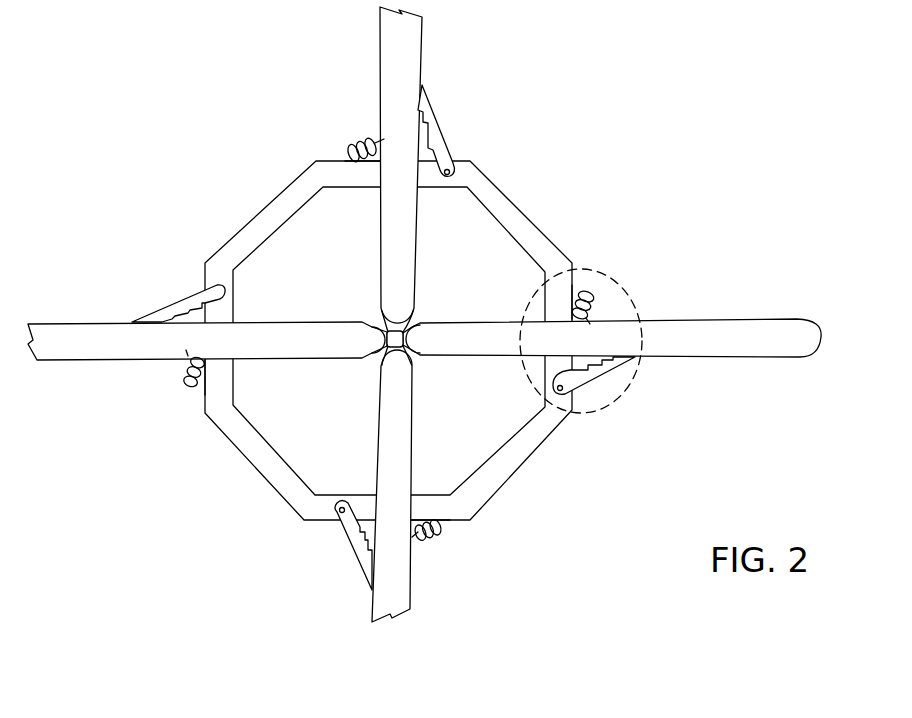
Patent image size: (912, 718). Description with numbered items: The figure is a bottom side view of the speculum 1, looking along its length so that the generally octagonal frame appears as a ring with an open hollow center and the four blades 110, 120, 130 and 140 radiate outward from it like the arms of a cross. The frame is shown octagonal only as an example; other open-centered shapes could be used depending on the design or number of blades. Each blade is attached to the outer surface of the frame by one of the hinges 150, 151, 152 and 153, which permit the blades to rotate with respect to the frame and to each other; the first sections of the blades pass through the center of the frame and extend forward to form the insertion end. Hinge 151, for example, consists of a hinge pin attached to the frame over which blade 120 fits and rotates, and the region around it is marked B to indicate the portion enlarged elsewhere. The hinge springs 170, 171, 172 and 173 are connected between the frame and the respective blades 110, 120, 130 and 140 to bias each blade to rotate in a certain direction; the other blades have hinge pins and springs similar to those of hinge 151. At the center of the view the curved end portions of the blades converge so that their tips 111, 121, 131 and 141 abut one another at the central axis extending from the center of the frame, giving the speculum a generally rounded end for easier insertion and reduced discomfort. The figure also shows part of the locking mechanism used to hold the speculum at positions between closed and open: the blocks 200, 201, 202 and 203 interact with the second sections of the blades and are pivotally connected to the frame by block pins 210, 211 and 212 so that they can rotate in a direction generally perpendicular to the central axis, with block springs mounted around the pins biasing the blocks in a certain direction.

The speculum 1 is at (637, 122).
The blade 110 is at (402, 583).
The tip 111 is at (397, 357).
The blade 120 is at (802, 350).
The tip 121 is at (415, 338).
The blade 130 is at (410, 29).
The tip 131 is at (397, 322).
The blade 140 is at (63, 353).
The tip 141 is at (380, 338).
The hinge 150 is at (442, 525).
The hinge 151 is at (583, 290).
The hinge 152 is at (348, 152).
The hinge 153 is at (198, 397).
The hinge spring 170 is at (433, 540).
The hinge spring 171 is at (592, 295).
The hinge spring 172 is at (357, 140).
The hinge spring 173 is at (188, 380).
The block 200 is at (347, 547).
The block 201 is at (627, 372).
The block 202 is at (442, 127).
The block 203 is at (183, 298).
The block pin 210 is at (333, 512).
The block pin 211 is at (569, 396).
The block pin 212 is at (452, 167).
The detail region B is at (595, 337).